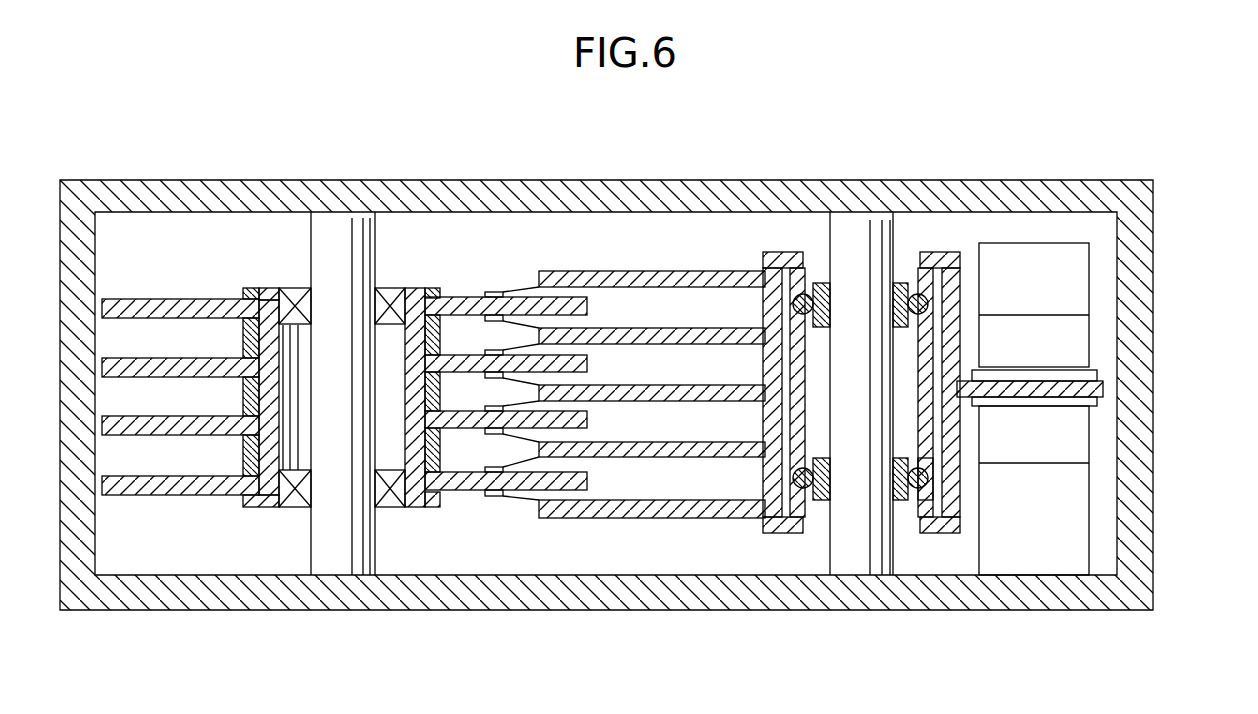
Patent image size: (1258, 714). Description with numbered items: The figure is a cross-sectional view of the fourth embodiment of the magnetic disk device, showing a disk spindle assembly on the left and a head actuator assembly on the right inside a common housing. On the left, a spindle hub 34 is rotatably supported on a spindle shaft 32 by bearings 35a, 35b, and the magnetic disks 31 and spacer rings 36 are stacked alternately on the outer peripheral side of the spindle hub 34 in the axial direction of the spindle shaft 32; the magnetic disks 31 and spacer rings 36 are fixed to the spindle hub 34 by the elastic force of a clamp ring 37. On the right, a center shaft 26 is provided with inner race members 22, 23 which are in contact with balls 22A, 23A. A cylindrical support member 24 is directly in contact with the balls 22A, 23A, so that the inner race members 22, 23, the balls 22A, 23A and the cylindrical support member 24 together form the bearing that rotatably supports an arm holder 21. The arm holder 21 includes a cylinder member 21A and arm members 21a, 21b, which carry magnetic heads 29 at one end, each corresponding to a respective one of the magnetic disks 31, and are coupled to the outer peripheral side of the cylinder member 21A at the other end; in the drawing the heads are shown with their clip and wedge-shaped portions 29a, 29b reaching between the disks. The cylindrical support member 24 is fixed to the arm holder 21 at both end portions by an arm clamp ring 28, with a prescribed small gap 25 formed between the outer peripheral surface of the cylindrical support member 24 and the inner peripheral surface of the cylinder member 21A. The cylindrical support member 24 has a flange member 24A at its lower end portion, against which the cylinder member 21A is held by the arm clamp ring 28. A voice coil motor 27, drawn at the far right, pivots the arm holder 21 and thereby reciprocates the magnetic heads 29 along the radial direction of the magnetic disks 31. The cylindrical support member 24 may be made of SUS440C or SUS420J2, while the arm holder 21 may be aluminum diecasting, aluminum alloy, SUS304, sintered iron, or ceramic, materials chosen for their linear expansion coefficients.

The arm holder 21 is at (960, 275).
The cylinder member 21A is at (960, 300).
The arm member 21a is at (602, 518).
The arm member 21b is at (700, 458).
The inner race member 22 is at (900, 283).
The ball 22A is at (920, 290).
The inner race member 23 is at (898, 500).
The ball 23A is at (923, 490).
The cylindrical support member 24 is at (933, 440).
The flange member 24A is at (952, 524).
The small gap 25 is at (933, 491).
The center shaft 26 is at (848, 218).
The voice coil motor 27 is at (1085, 345).
The arm clamp ring 28 is at (787, 252).
The magnetic head 29 is at (496, 488).
The spacer clip 29a is at (503, 497).
The spacer wedge 29b is at (492, 466).
The magnetic disk 31 is at (165, 299).
The spindle shaft 32 is at (311, 548).
The spindle hub 34 is at (243, 505).
The bearing 35a is at (394, 292).
The bearing 35b is at (398, 508).
The spacer ring 36 is at (243, 342).
The clamp ring 37 is at (262, 288).